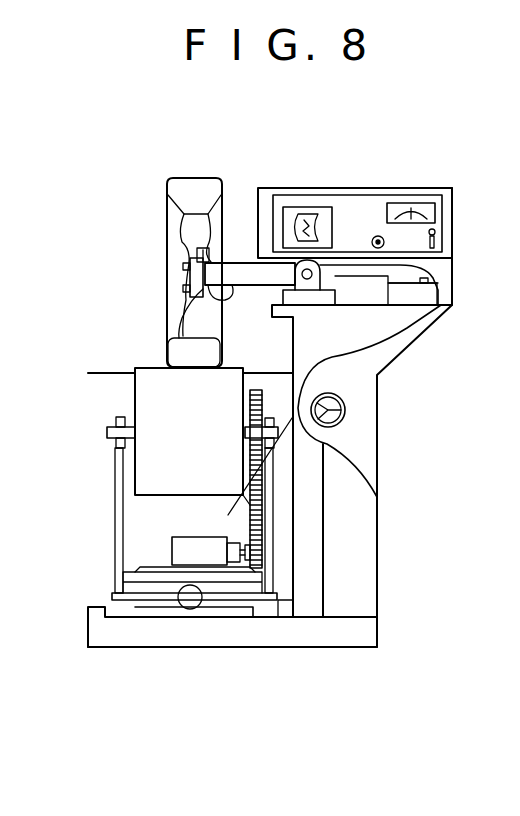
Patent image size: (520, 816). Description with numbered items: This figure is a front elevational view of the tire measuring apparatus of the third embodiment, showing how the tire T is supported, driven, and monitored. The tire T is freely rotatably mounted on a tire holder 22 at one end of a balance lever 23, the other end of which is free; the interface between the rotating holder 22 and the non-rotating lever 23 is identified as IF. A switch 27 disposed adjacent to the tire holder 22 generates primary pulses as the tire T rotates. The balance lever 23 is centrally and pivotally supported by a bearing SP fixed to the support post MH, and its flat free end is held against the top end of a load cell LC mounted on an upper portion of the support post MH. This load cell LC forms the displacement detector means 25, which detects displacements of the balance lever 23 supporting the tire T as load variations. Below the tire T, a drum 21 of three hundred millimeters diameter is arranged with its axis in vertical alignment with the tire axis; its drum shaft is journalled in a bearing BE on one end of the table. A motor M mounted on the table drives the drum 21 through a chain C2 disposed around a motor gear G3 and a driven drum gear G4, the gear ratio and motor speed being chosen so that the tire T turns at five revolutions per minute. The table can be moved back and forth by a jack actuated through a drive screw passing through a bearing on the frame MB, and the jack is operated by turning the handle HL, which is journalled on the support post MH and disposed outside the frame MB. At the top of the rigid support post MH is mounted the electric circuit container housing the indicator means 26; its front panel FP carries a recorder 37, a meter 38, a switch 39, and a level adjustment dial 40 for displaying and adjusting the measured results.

The tire T is at (207, 178).
The drum 21 is at (155, 390).
The tire holder 22 is at (189, 274).
The balance lever 23 is at (241, 278).
The displacement detector means 25 is at (452, 319).
The indicator means 26 is at (398, 168).
The switch 27 is at (214, 260).
The recorder 37 is at (307, 207).
The meter 38 is at (414, 203).
The switch 39 is at (437, 234).
The level adjustment dial 40 is at (385, 243).
The front panel FP is at (361, 215).
The interface IF is at (223, 300).
The bearing SP is at (313, 292).
The load cell LC is at (428, 292).
The handle HL is at (350, 408).
The support post MH is at (308, 560).
The frame MB is at (161, 648).
The bearing BE is at (117, 418).
The driven drum gear G4 is at (266, 400).
The motor gear G3 is at (244, 542).
The chain C2 is at (248, 498).
The motor M is at (178, 550).